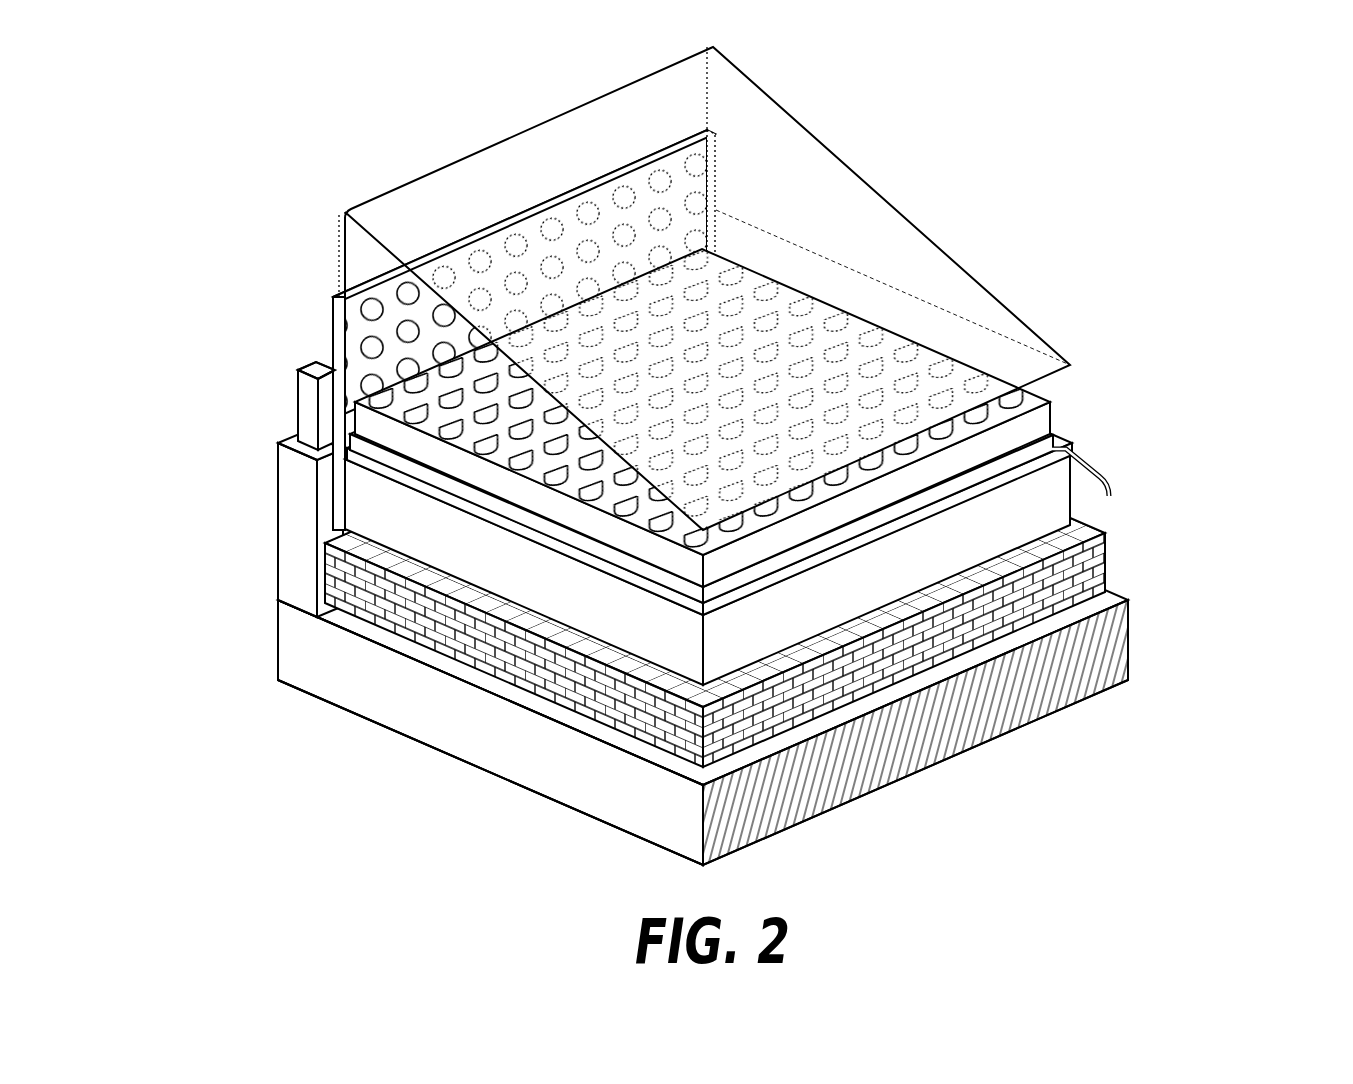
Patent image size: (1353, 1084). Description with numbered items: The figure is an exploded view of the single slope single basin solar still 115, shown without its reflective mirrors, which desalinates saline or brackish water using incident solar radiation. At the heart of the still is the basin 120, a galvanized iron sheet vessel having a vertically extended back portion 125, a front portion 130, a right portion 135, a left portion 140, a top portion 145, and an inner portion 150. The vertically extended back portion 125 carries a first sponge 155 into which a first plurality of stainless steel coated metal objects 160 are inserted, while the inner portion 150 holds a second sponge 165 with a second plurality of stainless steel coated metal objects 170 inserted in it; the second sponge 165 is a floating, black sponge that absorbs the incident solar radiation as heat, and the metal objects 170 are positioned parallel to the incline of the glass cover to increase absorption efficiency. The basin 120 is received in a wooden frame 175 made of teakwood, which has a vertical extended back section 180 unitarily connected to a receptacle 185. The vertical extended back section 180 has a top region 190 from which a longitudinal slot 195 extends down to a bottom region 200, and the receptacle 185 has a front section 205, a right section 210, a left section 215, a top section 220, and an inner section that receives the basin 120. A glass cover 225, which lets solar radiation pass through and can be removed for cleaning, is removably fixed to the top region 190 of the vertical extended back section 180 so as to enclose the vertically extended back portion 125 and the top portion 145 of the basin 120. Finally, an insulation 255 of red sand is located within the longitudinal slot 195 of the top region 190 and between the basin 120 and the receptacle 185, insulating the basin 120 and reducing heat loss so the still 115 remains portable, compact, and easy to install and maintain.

The single slope single basin solar still 115 is at (1090, 120).
The basin 120 is at (378, 521).
The vertically extended back portion 125 is at (332, 300).
The front portion 130 is at (758, 630).
The right portion 135 is at (1068, 441).
The left portion 140 is at (663, 637).
The top portion 145 is at (1013, 467).
The inner portion 150 is at (597, 556).
The first sponge 155 is at (497, 243).
The first plurality of stainless steel coated metal objects 160 is at (622, 188).
The second sponge 165 is at (897, 492).
The second plurality of stainless steel coated metal objects 170 is at (856, 490).
The wooden frame 175 is at (305, 610).
The vertical extended back section 180 is at (268, 535).
The receptacle 185 is at (430, 738).
The top region 190 is at (278, 437).
The longitudinal slot 195 is at (296, 430).
The bottom region 200 is at (268, 670).
The front section 205 is at (803, 793).
The right section 210 is at (1132, 595).
The left section 215 is at (630, 800).
The top section 220 is at (1092, 627).
The glass cover 225 is at (912, 262).
The insulation 255 is at (889, 660).